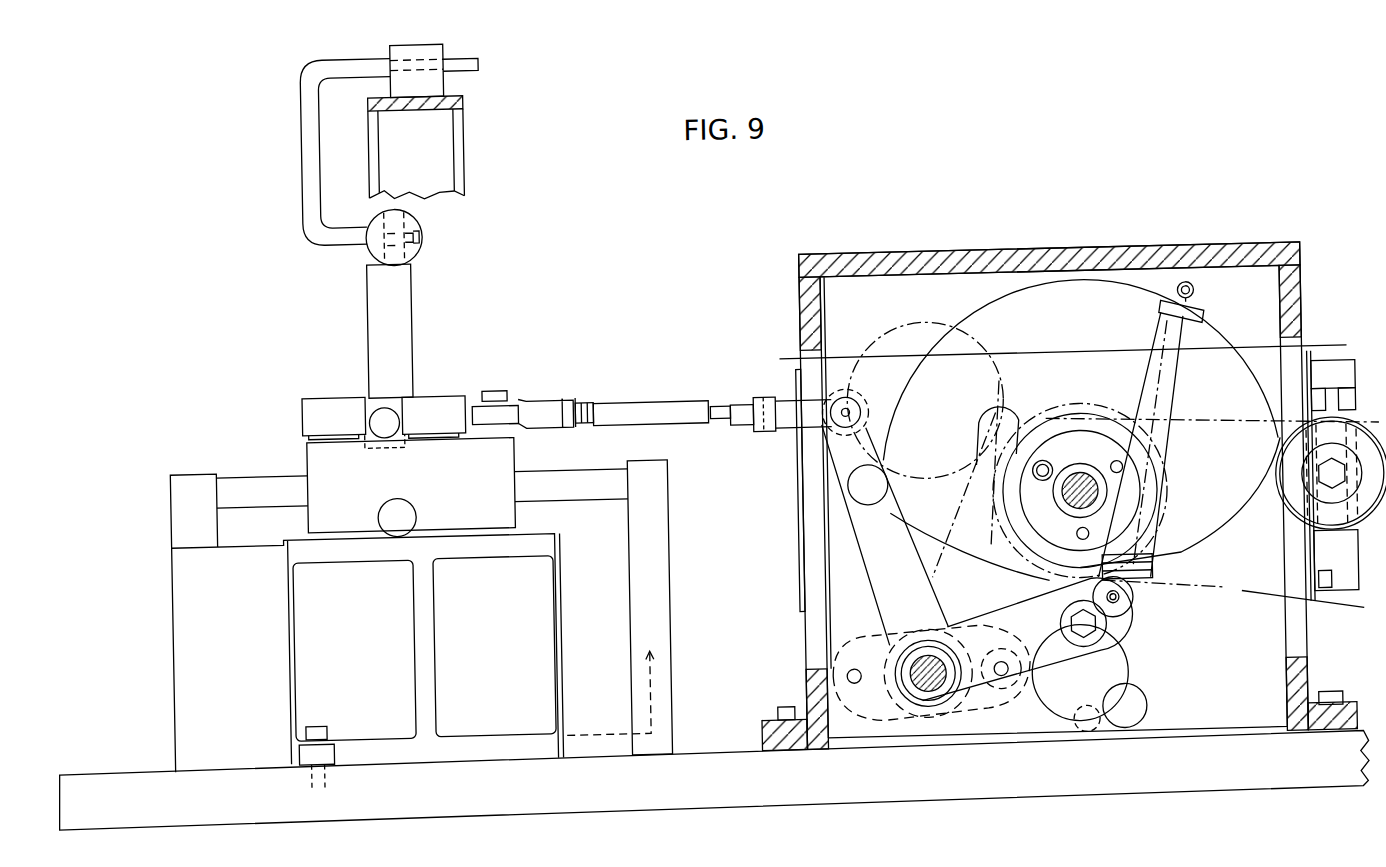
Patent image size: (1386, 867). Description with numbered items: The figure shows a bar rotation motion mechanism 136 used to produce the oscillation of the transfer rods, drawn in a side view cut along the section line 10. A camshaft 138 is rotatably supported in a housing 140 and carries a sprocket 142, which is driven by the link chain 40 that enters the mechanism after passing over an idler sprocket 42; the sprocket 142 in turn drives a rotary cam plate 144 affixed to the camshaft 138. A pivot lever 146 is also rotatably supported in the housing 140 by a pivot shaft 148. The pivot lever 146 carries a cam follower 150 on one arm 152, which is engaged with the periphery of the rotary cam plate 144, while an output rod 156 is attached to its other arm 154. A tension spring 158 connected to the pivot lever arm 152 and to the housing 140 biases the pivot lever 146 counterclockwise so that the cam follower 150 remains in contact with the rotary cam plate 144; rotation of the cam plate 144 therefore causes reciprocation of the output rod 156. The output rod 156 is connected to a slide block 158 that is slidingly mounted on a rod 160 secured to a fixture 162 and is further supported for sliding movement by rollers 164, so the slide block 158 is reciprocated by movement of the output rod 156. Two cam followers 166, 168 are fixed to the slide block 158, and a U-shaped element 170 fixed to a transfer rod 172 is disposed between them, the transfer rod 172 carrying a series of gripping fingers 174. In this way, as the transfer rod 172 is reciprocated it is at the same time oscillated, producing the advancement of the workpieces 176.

The section line 10 is at (791, 344).
The link chain 40 is at (1223, 604).
The idler sprocket 42 is at (1280, 528).
The bar rotation motion mechanism 136 is at (815, 484).
The camshaft 138 is at (1079, 490).
The housing 140 is at (834, 266).
The sprocket 142 is at (1076, 421).
The rotary cam plate 144 is at (1039, 268).
The pivot lever 146 is at (867, 615).
The pivot shaft 148 is at (935, 692).
The cam follower 150 is at (1124, 623).
The arm 152 is at (1030, 621).
The arm 154 is at (851, 512).
The output rod 156 is at (775, 389).
The tension spring 158 is at (309, 434).
The rod 160 is at (259, 474).
The fixture 162 is at (173, 639).
The rollers 164 is at (406, 505).
The cam follower 166 is at (322, 392).
The cam follower 168 is at (433, 395).
The U-shaped element 170 is at (371, 345).
The transfer rod 172 is at (372, 243).
The gripping fingers 174 is at (317, 199).
The workpieces 176 is at (419, 46).